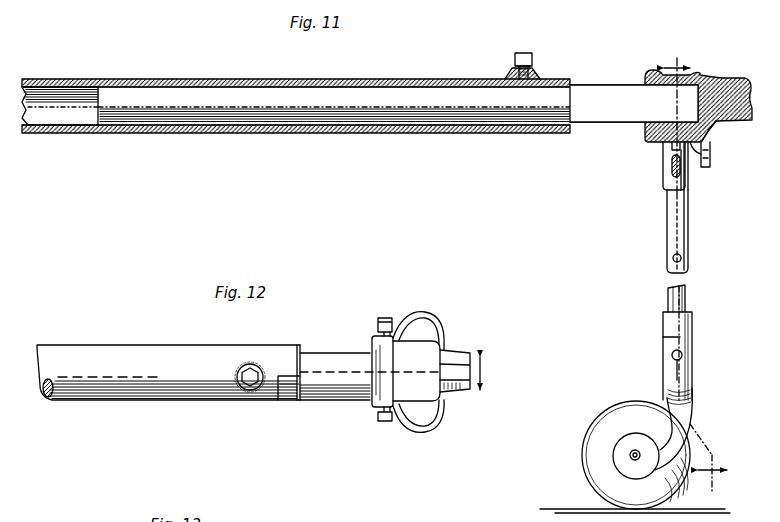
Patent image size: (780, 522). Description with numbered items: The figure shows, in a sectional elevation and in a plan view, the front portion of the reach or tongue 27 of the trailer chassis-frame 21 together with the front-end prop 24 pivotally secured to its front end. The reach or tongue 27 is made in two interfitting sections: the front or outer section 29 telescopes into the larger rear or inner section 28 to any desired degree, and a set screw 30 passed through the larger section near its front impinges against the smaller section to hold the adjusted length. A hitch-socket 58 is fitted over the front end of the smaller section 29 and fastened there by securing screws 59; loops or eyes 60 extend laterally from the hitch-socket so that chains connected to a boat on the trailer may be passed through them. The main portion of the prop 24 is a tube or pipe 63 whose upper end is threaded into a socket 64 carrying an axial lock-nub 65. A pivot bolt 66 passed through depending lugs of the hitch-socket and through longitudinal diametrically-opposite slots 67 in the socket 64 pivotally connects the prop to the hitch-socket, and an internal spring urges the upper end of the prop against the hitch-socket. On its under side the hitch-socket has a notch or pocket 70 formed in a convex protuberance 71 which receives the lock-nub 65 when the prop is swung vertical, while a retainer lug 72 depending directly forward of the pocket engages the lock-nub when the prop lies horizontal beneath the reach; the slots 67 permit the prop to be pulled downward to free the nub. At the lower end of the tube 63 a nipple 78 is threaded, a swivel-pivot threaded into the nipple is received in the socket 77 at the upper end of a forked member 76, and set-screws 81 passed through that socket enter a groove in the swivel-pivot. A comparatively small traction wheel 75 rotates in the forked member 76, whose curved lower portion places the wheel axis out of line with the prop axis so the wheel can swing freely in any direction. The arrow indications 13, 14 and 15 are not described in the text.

In FIG. 12, the arrow indicating direction of adjustment 13 is at (279, 381).
In FIG. 11, the arrow indicating pivot direction 14 is at (677, 55).
In FIG. 11, the caster stem / arrow 15 is at (683, 299).
In FIG. 11, the chassis-frame 21 is at (128, 134).
In FIG. 12, the chassis-frame 21 is at (152, 404).
In FIG. 11, the front-end prop 24 is at (666, 308).
In FIG. 11, the reach or tongue 27 is at (170, 92).
In FIG. 12, the reach or tongue 27 is at (310, 355).
In FIG. 11, the rear or inner section 28 is at (66, 88).
In FIG. 12, the rear or inner section 28 is at (124, 358).
In FIG. 11, the front or outer section 29 is at (312, 95).
In FIG. 12, the front or outer section 29 is at (342, 386).
In FIG. 11, the set screw 30 is at (514, 58).
In FIG. 12, the set screw 30 is at (246, 366).
In FIG. 11, the hitch-socket 58 is at (706, 82).
In FIG. 12, the hitch-socket 58 is at (432, 355).
In FIG. 12, the securing screws 59 is at (386, 320).
In FIG. 12, the loops or eyes 60 is at (422, 314).
In FIG. 11, the tube or pipe 63 is at (669, 229).
In FIG. 11, the socket 64 is at (689, 183).
In FIG. 11, the lock-nub 65 is at (672, 150).
In FIG. 11, the pivot bolt 66 is at (701, 150).
In FIG. 11, the slots 67 is at (672, 170).
In FIG. 11, the notch or pocket 70 is at (673, 126).
In FIG. 11, the convex protuberance 71 is at (706, 162).
In FIG. 11, the retainer lug 72 is at (712, 143).
In FIG. 11, the traction wheel 75 is at (594, 454).
In FIG. 11, the forked member 76 is at (676, 426).
In FIG. 11, the socket 77 is at (672, 357).
In FIG. 11, the nipple 78 is at (690, 327).
In FIG. 11, the set-screws 81 is at (683, 355).